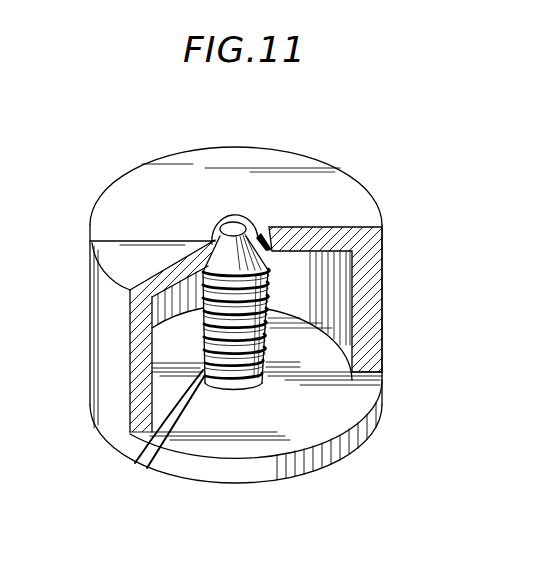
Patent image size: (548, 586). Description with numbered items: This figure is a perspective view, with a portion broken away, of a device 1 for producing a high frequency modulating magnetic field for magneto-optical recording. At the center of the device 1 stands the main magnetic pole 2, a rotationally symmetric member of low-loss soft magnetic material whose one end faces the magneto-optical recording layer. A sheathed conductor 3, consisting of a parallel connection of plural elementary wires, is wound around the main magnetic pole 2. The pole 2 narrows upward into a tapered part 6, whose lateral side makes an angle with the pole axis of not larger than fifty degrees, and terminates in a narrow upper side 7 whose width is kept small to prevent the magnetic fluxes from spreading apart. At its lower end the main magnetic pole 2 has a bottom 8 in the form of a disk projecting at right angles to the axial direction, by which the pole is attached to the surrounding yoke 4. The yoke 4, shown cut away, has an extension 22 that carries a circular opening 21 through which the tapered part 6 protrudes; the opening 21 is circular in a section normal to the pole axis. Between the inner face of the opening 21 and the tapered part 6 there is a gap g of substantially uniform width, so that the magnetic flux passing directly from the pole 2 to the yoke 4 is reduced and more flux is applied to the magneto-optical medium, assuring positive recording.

The device for producing high frequency modulating magnetic field 1 is at (366, 454).
The main magnetic pole 2 is at (250, 393).
The sheathed conductor 3 is at (215, 392).
The yoke 4 is at (95, 293).
The tapered part 6 is at (283, 235).
The upper side 7 is at (234, 220).
The bottom 8 is at (360, 391).
The opening 21 is at (272, 242).
The extension of the yoke 22 is at (117, 197).
The gap g is at (213, 242).